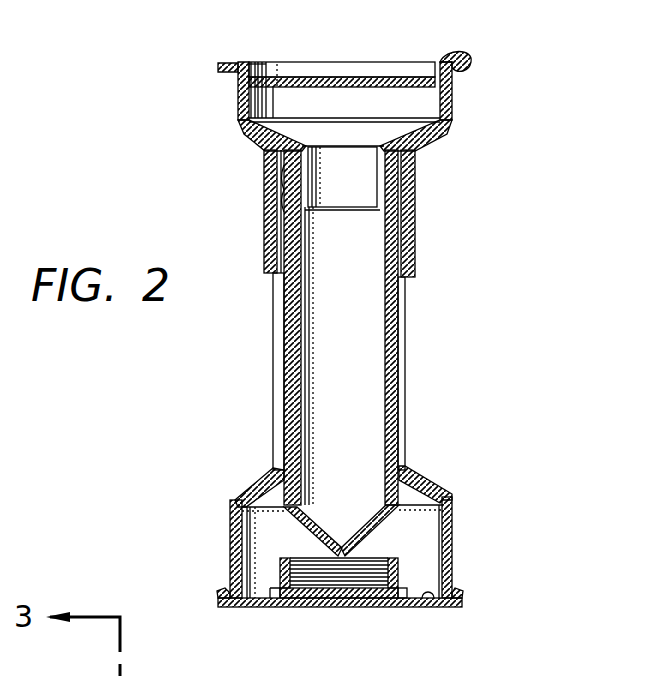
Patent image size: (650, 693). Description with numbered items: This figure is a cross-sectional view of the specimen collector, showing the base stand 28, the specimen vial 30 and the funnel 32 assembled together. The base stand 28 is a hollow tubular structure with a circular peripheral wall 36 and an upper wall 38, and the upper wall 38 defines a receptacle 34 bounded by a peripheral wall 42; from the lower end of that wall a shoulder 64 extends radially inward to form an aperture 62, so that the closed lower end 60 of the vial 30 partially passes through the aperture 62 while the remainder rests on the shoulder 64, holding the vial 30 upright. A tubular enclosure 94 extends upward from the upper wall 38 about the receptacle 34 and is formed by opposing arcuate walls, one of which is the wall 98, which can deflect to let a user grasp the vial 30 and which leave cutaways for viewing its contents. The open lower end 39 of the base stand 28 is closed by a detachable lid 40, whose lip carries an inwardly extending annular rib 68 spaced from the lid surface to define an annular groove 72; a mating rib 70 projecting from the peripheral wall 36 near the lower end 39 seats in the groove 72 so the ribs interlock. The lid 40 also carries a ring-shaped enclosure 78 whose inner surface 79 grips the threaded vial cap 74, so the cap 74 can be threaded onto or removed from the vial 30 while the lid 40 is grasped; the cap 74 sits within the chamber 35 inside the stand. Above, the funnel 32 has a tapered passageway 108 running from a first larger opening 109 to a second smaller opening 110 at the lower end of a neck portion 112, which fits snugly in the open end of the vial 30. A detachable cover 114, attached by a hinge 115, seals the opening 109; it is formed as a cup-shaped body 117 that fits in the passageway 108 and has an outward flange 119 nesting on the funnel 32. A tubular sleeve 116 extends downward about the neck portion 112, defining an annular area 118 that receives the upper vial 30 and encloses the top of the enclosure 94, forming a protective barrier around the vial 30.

The base stand 28 is at (464, 491).
The specimen vial 30 is at (395, 362).
The funnel 32 is at (464, 100).
The receptacle 34 is at (387, 458).
The chamber 35 is at (447, 522).
The peripheral wall 36 is at (453, 556).
The upper wall 38 is at (424, 490).
The lower end 39 is at (420, 607).
The lid 40 is at (433, 607).
The peripheral wall 42 is at (235, 500).
The closed lower end 60 is at (370, 528).
The aperture 62 is at (248, 512).
The shoulder 64 is at (288, 508).
The annular rib 68 is at (457, 607).
The mating rib 70 is at (458, 598).
The annular groove 72 is at (240, 604).
The vial cap 74 is at (266, 607).
The ring-shaped enclosure 78 is at (405, 607).
The inner surface 79 is at (350, 607).
The tubular enclosure 94 is at (407, 296).
The arcuately shaped wall 98 is at (282, 350).
The tapered passageway 108 is at (420, 142).
The first larger funnel opening 109 is at (258, 62).
The second smaller funnel opening 110 is at (320, 210).
The neck portion 112 is at (396, 168).
The detachable cover 114 is at (405, 72).
The hinge 115 is at (470, 60).
The tubular sleeve 116 is at (414, 252).
The cup-shaped body 117 is at (275, 62).
The annular area 118 is at (282, 187).
The flange 119 is at (220, 70).